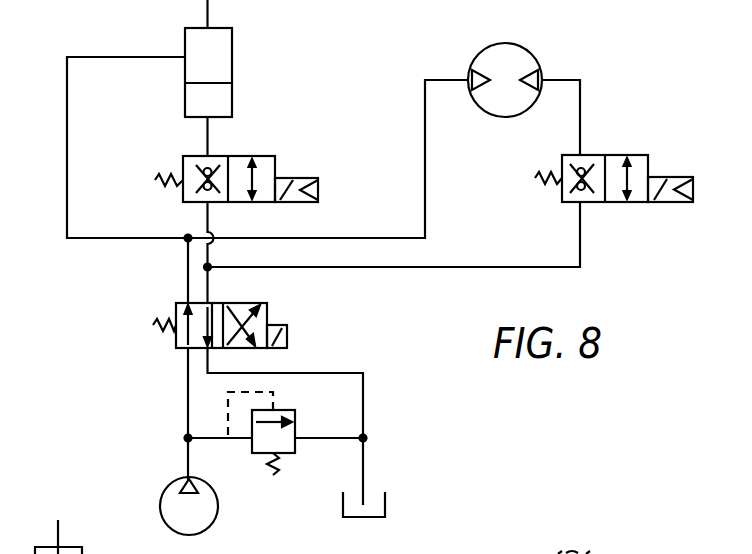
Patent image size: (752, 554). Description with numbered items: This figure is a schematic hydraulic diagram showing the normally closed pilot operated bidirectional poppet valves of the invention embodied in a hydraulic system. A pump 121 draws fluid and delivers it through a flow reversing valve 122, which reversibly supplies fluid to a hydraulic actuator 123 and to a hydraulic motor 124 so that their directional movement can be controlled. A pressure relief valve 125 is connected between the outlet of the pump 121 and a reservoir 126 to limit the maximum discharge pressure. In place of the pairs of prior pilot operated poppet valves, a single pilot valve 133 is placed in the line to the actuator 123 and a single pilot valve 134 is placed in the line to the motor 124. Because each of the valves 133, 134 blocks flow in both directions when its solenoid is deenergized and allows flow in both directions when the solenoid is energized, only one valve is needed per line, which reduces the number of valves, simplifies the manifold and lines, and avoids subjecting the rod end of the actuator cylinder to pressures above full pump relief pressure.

The pump 121 is at (172, 490).
The flow reversing valve 122 is at (180, 337).
The hydraulic actuator 123 is at (232, 105).
The motor 124 is at (528, 58).
The pressure relief valve 125 is at (297, 448).
The reservoir 126 is at (385, 503).
The pilot operated bidirectional poppet valve 133 is at (241, 156).
The pilot operated bidirectional poppet valve 134 is at (598, 155).